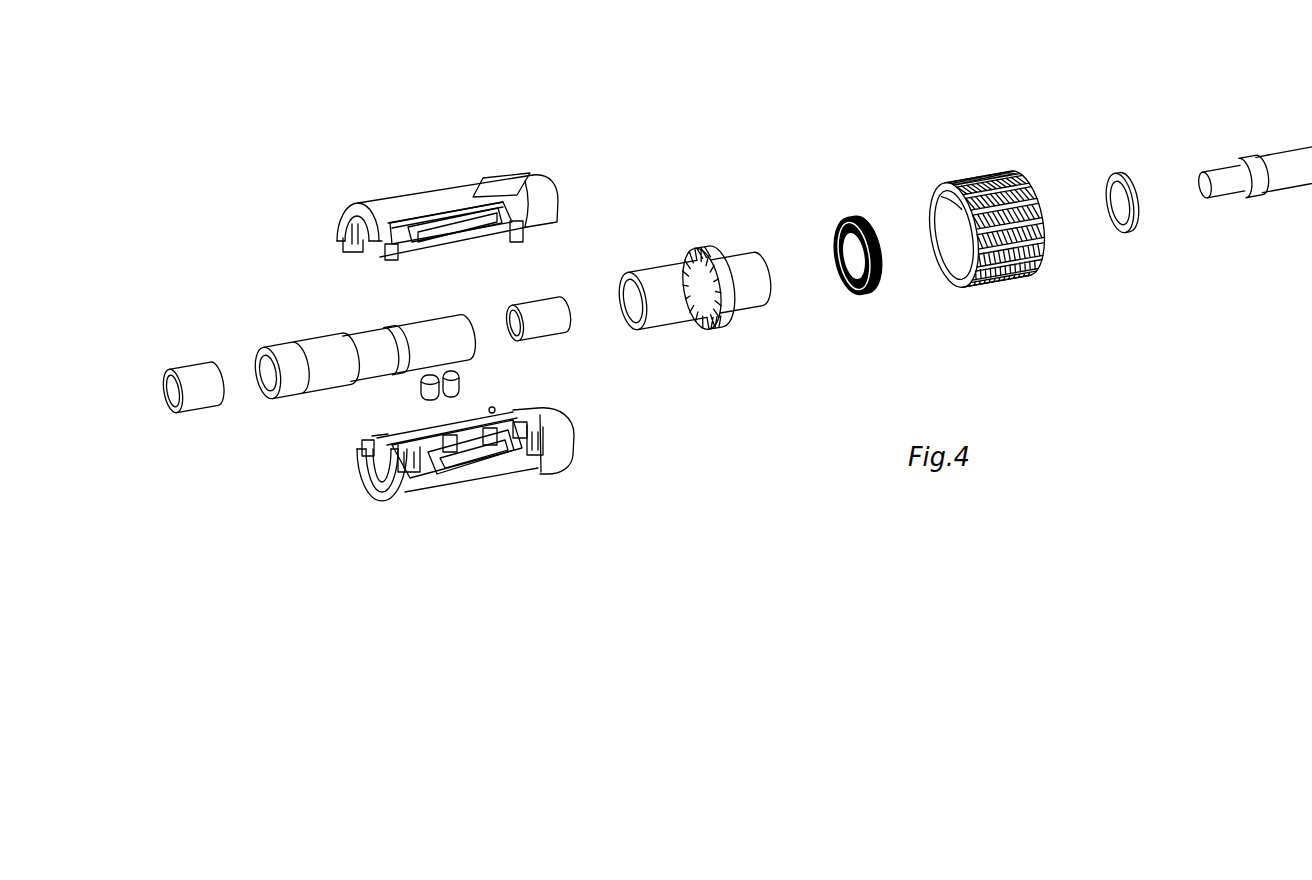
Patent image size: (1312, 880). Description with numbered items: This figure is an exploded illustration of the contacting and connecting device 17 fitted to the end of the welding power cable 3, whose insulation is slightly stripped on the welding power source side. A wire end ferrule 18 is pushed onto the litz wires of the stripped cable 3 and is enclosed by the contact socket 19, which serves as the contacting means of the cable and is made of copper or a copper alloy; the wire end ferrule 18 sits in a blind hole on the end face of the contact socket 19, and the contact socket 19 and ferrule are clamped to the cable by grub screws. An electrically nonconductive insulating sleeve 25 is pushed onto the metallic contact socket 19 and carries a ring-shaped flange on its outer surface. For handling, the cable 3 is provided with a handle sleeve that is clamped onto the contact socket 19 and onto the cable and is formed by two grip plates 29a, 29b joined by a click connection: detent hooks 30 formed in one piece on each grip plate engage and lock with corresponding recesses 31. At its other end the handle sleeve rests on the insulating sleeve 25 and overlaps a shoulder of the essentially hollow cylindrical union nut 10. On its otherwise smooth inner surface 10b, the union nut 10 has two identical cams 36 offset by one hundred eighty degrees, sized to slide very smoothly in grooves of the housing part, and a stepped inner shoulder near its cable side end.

The welding power cable 3 is at (1208, 145).
The union nut 10 is at (978, 158).
The inner surface of the union nut 10b is at (945, 268).
The contacting and connecting device 17 is at (645, 133).
The wire end ferrule 18 is at (538, 307).
The contact socket 19 is at (309, 334).
The insulating sleeve 25 is at (684, 331).
The grip plate 29a is at (537, 472).
The grip plate 29b is at (493, 178).
The detent hooks 30 is at (395, 262).
The recesses 31 is at (407, 474).
The cams 36 is at (931, 218).